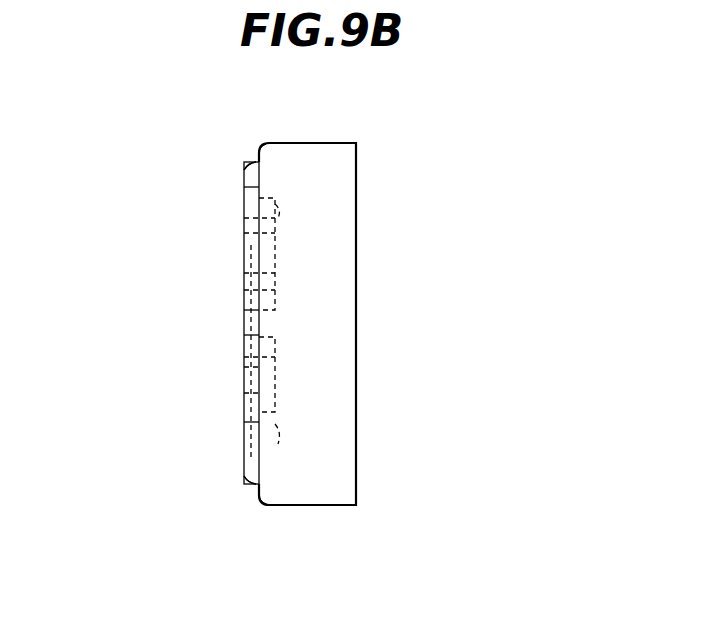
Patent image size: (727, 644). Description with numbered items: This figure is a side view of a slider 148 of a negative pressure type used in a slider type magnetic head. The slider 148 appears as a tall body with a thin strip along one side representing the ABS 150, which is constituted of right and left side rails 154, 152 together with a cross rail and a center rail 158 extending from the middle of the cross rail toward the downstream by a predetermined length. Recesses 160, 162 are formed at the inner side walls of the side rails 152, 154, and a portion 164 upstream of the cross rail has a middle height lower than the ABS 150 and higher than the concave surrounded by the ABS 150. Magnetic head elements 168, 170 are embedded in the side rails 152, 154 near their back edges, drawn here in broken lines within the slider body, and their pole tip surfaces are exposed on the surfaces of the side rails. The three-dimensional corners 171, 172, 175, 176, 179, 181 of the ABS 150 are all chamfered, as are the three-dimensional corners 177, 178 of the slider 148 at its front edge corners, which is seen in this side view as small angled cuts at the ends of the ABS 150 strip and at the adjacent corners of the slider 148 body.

The slider 148 is at (421, 111).
The ABS 150 is at (228, 408).
The left side rail 152 is at (244, 230).
The right side rail 154 is at (243, 421).
The center rail 158 is at (244, 326).
The recess 160 is at (244, 249).
The recess 162 is at (243, 393).
The portion upstream of the cross rail 164 is at (244, 187).
The magnetic head element 168 is at (278, 216).
The magnetic head element 170 is at (278, 444).
The three-dimensional corner of ABS 171 is at (247, 160).
The three-dimensional corner of ABS 172 is at (247, 487).
The three-dimensional corner of ABS 175 is at (244, 312).
The three-dimensional corner of ABS 176 is at (243, 331).
The three-dimensional corner of slider 177 is at (262, 142).
The three-dimensional corner of slider 178 is at (260, 504).
The three-dimensional corner of ABS 179 is at (244, 277).
The three-dimensional corner of ABS 181 is at (243, 368).